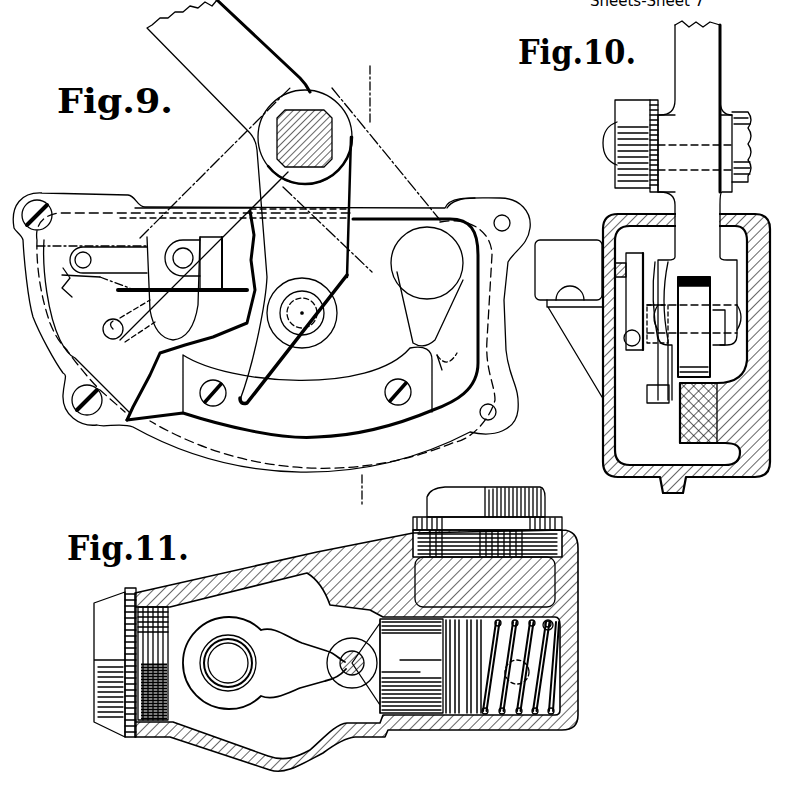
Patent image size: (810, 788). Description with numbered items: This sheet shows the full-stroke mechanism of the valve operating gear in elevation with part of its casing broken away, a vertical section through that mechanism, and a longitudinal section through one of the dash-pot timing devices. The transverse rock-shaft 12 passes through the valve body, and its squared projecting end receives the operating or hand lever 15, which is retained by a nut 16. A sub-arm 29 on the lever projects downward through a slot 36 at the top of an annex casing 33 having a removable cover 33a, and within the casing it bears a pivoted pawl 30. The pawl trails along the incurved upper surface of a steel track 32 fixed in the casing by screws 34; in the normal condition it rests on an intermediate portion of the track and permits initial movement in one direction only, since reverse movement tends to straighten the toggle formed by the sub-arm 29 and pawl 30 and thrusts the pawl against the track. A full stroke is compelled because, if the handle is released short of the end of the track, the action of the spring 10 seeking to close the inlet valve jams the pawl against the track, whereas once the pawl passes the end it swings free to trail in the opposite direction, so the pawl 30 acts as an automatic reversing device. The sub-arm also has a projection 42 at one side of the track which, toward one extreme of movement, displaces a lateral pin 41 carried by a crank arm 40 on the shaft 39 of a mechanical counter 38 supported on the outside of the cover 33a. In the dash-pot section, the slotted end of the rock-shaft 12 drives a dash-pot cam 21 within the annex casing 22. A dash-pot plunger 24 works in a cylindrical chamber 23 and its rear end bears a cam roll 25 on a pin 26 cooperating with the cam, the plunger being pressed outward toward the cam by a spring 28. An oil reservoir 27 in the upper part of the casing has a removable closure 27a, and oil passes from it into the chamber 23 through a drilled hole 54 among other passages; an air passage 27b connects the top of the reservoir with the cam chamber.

In FIG. 9, the spring 10 is at (369, 85).
In FIG. 11, the spring 10 is at (363, 499).
In FIG. 9, the rock-shaft 12 is at (310, 118).
In FIG. 10, the rock-shaft 12 is at (740, 114).
In FIG. 11, the rock-shaft 12 is at (230, 645).
In FIG. 9, the operating or hand lever 15 is at (237, 42).
In FIG. 10, the operating or hand lever 15 is at (690, 72).
In FIG. 10, the nut 16 is at (625, 112).
In FIG. 11, the dash-pot cam 21 is at (278, 650).
In FIG. 11, the annex casing 22 is at (222, 572).
In FIG. 11, the cylindrical chamber 23 is at (490, 722).
In FIG. 11, the dash-pot plunger 24 is at (410, 715).
In FIG. 11, the cam roll 25 is at (360, 690).
In FIG. 11, the pin 26 is at (344, 677).
In FIG. 11, the oil reservoir 27 is at (545, 580).
In FIG. 11, the removable closure 27a is at (530, 503).
In FIG. 11, the air passage 27b is at (350, 570).
In FIG. 11, the spring 28 is at (548, 648).
In FIG. 9, the sub-arm 29 is at (200, 183).
In FIG. 10, the sub-arm 29 is at (688, 207).
In FIG. 9, the pawl 30 is at (200, 310).
In FIG. 10, the pawl 30 is at (700, 362).
In FIG. 9, the steel track 32 is at (318, 393).
In FIG. 10, the steel track 32 is at (695, 420).
In FIG. 10, the annex casing 33 is at (718, 470).
In FIG. 9, the removable cover 33a is at (62, 372).
In FIG. 10, the removable cover 33a is at (608, 448).
In FIG. 9, the screws 34 is at (212, 385).
In FIG. 9, the slot 36 is at (440, 210).
In FIG. 10, the slot 36 is at (725, 220).
In FIG. 9, the mechanical counter 38 is at (210, 230).
In FIG. 10, the mechanical counter 38 is at (557, 250).
In FIG. 9, the shaft 39 is at (207, 240).
In FIG. 10, the shaft 39 is at (622, 263).
In FIG. 9, the crank arm 40 is at (120, 245).
In FIG. 10, the crank arm 40 is at (636, 300).
In FIG. 9, the lateral pin 41 is at (80, 254).
In FIG. 10, the lateral pin 41 is at (640, 350).
In FIG. 9, the projection 42 is at (250, 410).
In FIG. 10, the projection 42 is at (647, 395).
In FIG. 11, the drilled hole 54 is at (555, 690).